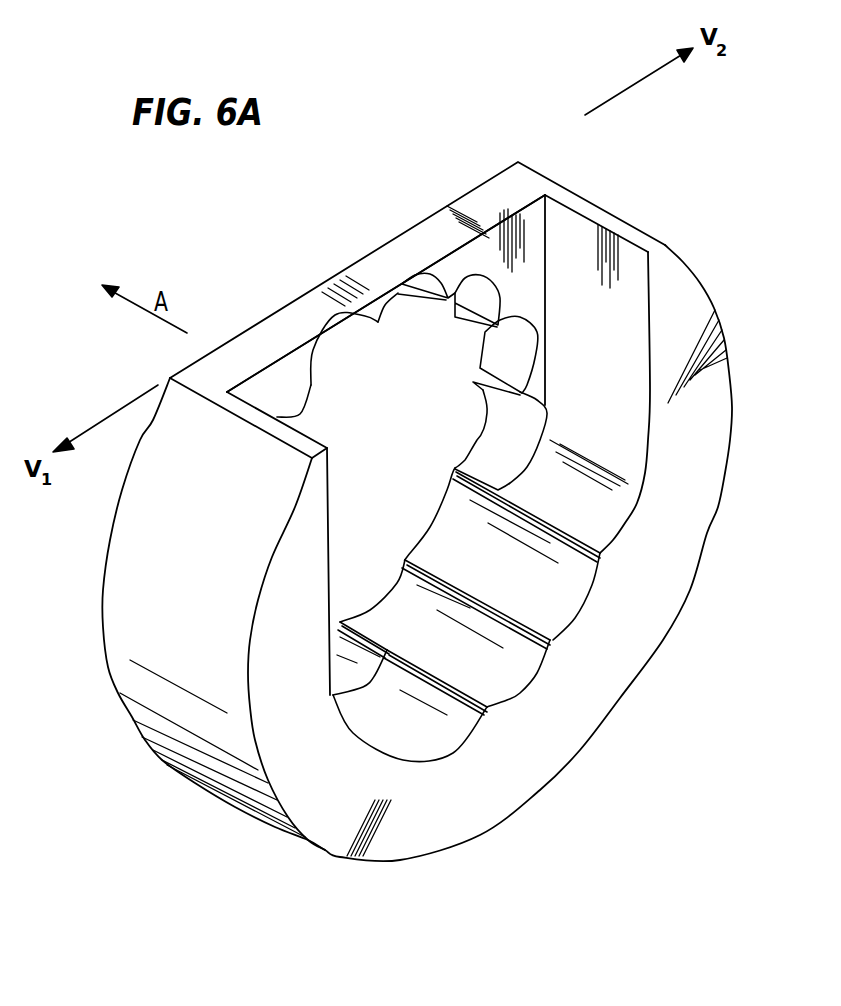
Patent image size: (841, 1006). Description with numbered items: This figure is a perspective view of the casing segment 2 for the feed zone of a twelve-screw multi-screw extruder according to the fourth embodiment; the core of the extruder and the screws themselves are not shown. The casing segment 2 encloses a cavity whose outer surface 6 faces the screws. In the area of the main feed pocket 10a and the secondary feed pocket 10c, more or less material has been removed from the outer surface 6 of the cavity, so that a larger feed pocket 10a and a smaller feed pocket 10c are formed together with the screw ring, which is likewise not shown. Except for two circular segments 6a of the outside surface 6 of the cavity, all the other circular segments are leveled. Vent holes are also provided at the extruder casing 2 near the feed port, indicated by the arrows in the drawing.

The casing segment 2 is at (690, 518).
The outer surface of the cavity 6 is at (420, 737).
The circular segments 6a is at (568, 595).
The main feed pocket 10a is at (288, 390).
The secondary feed pocket 10c is at (570, 243).